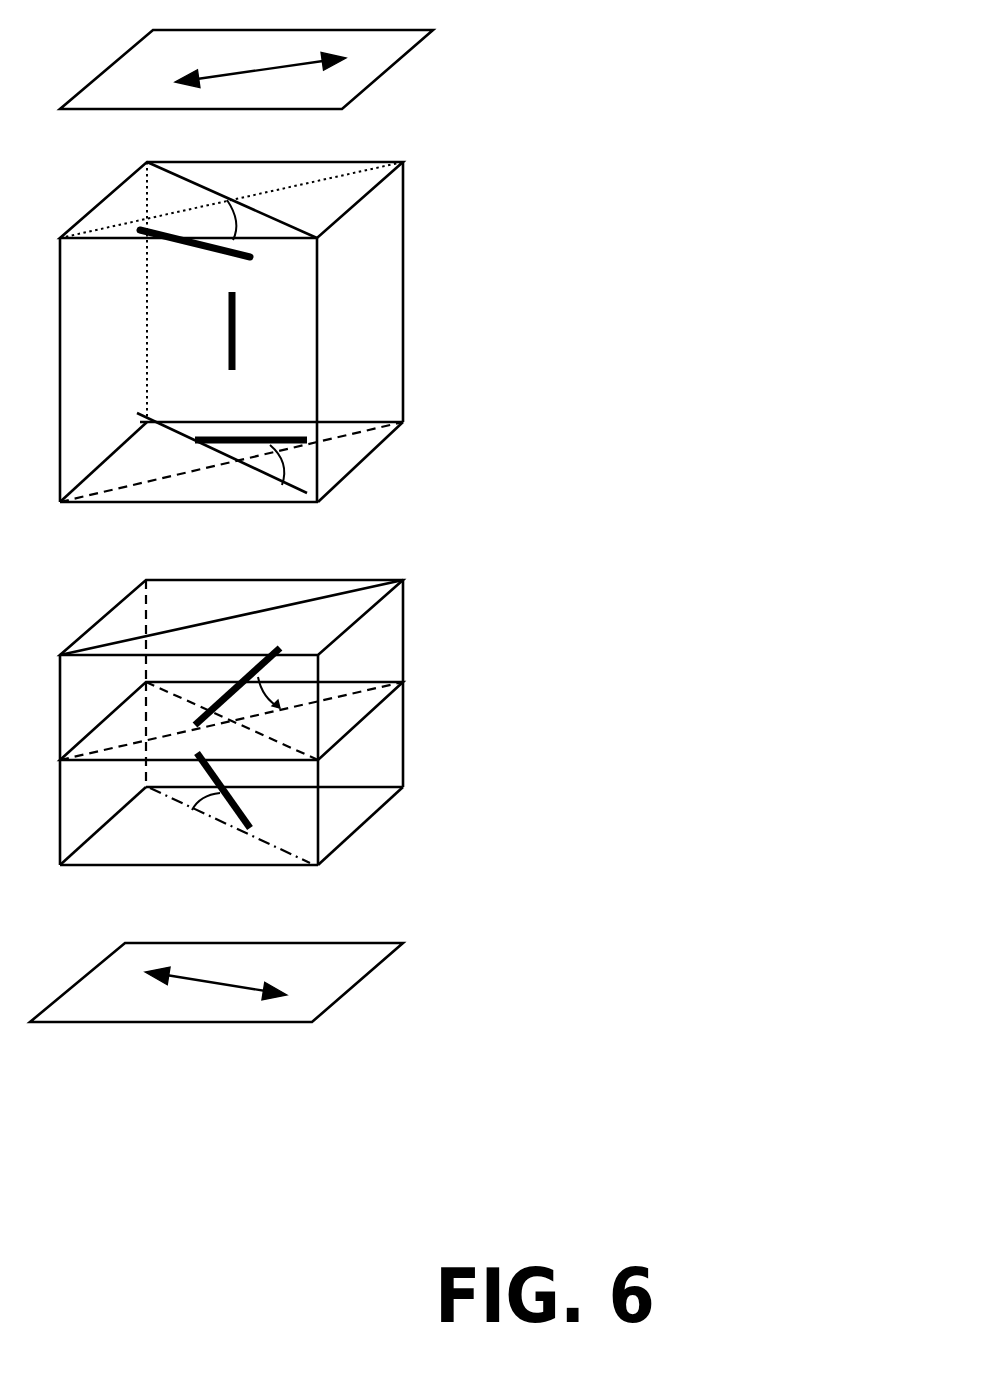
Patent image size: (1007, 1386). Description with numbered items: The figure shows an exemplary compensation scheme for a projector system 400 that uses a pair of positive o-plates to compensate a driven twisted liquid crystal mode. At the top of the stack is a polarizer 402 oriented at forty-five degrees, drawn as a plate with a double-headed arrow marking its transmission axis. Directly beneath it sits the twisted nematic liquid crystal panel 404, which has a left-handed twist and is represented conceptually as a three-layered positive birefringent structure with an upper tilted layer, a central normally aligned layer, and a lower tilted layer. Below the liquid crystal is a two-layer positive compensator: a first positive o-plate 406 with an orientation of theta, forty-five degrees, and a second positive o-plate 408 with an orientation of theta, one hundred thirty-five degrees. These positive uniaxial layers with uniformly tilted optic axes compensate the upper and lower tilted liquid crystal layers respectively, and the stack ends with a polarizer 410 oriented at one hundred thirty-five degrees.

The system 400 is at (877, 70).
The polarizer 402 is at (367, 73).
The twisted nematic liquid crystal panel 404 is at (338, 335).
The first positive o-plate 406 is at (365, 647).
The second positive o-plate 408 is at (337, 778).
The polarizer 410 is at (308, 987).